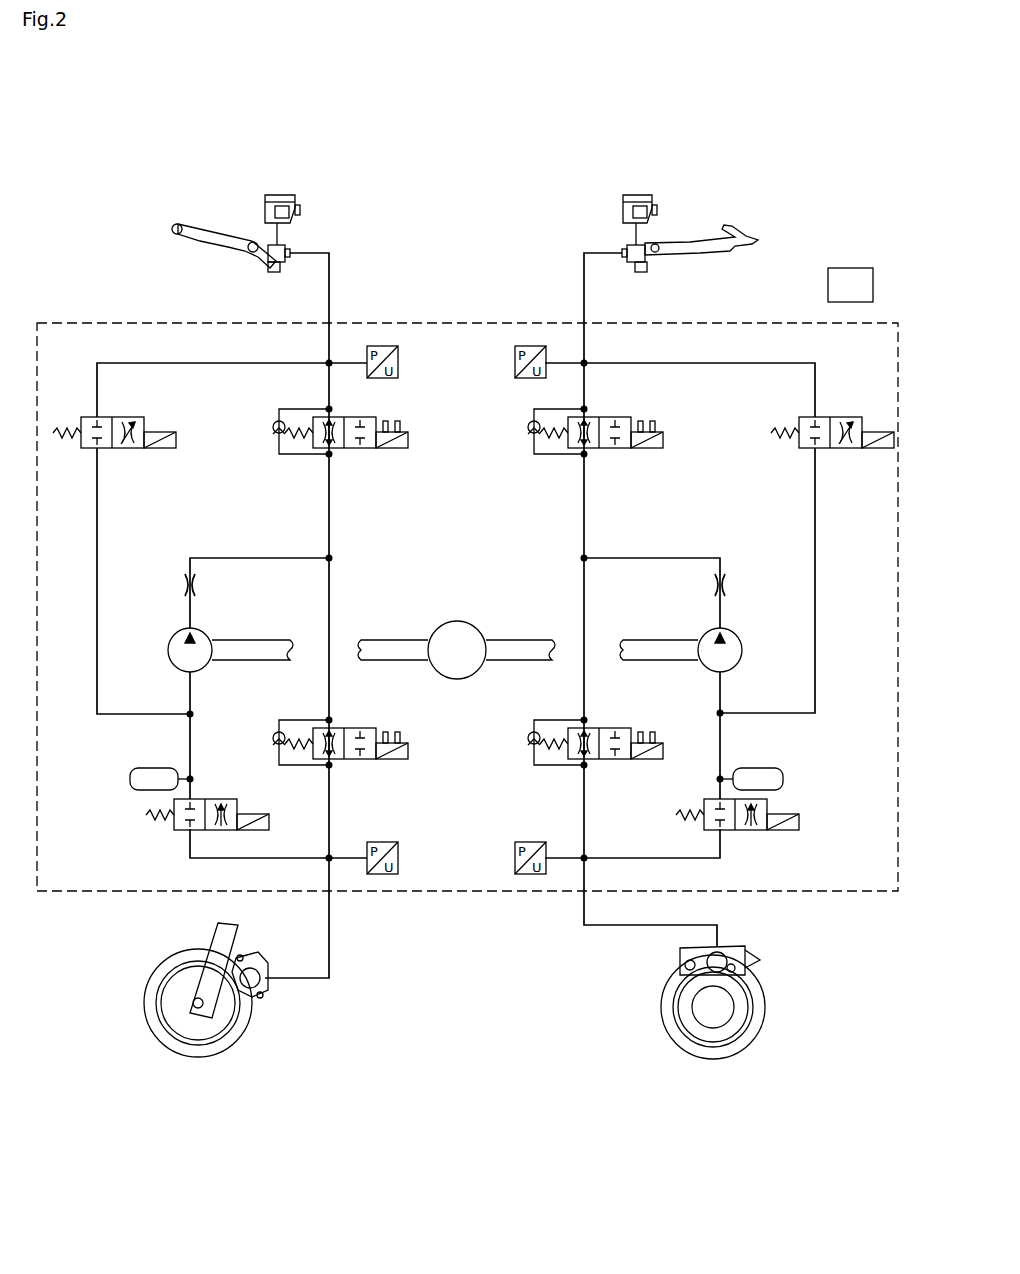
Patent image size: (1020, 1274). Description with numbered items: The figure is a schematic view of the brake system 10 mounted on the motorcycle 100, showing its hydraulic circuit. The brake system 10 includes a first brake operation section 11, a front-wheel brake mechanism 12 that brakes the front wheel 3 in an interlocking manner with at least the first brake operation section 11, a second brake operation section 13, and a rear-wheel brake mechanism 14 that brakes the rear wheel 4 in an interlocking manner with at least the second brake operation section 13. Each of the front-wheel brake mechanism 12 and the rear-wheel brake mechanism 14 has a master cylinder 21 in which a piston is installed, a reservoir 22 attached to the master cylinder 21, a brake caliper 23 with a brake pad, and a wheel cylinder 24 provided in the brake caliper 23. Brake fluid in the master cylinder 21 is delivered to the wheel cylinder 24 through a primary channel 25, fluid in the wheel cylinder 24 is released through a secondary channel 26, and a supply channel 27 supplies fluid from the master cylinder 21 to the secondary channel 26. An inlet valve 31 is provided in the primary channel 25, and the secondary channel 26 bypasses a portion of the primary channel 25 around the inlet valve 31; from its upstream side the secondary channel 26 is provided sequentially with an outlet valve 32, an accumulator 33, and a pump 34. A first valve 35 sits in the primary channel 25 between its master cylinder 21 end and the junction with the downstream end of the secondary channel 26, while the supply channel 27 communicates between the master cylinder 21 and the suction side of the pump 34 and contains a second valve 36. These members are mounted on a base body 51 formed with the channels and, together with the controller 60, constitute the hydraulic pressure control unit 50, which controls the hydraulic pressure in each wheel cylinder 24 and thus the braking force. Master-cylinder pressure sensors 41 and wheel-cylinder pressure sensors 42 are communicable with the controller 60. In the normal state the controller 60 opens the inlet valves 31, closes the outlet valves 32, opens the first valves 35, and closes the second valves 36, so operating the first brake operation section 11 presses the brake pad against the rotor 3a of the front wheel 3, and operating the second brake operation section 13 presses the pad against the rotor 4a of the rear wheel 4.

The motorcycle 100 is at (840, 86).
The brake system 10 is at (126, 216).
The first brake operation section 11 is at (200, 230).
The front-wheel brake mechanism 12 is at (370, 140).
The second brake operation section 13 is at (735, 235).
The rear-wheel brake mechanism 14 is at (545, 140).
The master cylinder 21 is at (280, 262).
The reservoir 22 is at (278, 195).
The brake caliper 23 is at (255, 958).
The wheel cylinder 24 is at (262, 983).
The primary channel 25 is at (329, 490).
The secondary channel 26 is at (258, 556).
The supply channel 27 is at (232, 365).
The inlet valve 31 is at (371, 760).
The outlet valve 32 is at (225, 798).
The accumulator 33 is at (153, 765).
The pump 34 is at (168, 648).
The first valve 35 is at (394, 450).
The second valve 36 is at (149, 450).
The master-cylinder pressure sensor 41 is at (398, 362).
The wheel-cylinder pressure sensor 42 is at (398, 858).
The hydraulic pressure control unit 50 is at (792, 242).
The base body 51 is at (63, 322).
The controller 60 is at (853, 256).
The front wheel 3 is at (205, 1081).
The rotor 3a is at (240, 1032).
The rear wheel 4 is at (721, 1078).
The rotor 4a is at (672, 1032).